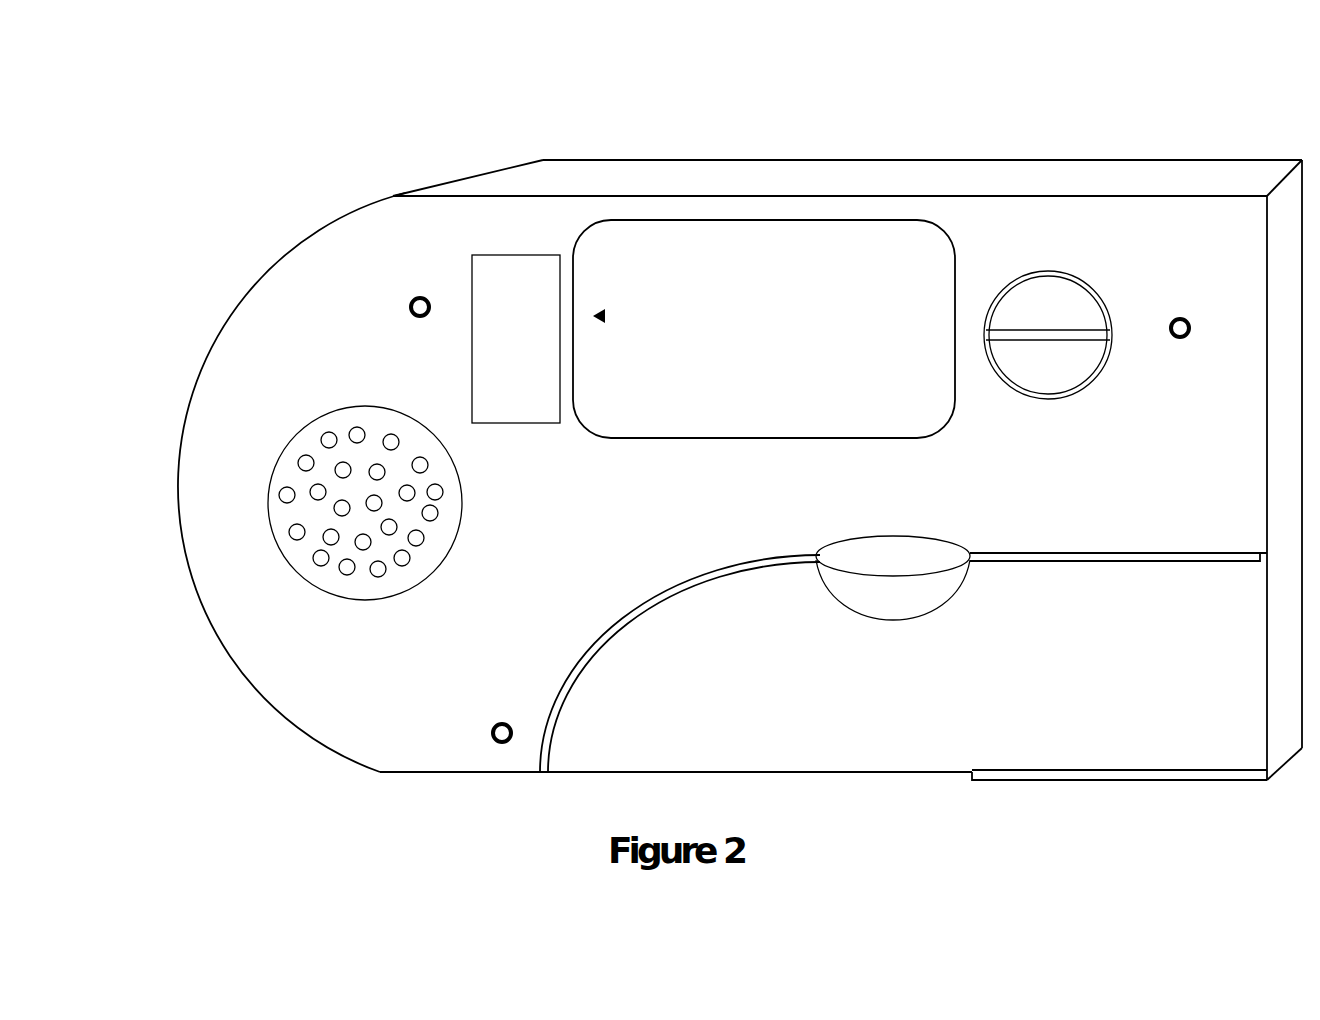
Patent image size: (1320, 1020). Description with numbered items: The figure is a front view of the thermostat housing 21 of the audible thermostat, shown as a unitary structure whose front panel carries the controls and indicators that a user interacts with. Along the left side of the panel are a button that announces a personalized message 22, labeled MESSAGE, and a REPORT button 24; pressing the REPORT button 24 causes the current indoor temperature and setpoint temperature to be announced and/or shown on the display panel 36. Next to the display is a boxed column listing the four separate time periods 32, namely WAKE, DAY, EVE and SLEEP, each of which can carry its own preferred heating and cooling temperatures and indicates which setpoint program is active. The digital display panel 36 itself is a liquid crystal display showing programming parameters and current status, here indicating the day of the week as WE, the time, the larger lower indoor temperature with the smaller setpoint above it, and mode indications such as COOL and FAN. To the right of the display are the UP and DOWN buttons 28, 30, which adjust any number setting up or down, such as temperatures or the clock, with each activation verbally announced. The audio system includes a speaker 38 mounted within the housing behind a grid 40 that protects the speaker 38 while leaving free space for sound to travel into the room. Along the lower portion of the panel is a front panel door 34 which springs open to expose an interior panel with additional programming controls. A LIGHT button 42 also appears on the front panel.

The thermostat housing 21 is at (548, 118).
The personalized message button 22 is at (420, 292).
The REPORT button 24 is at (478, 745).
The UP button 28 is at (1050, 300).
The DOWN button 30 is at (1090, 387).
The time periods 32 is at (533, 250).
The front panel door 34 is at (955, 600).
The display panel 36 is at (820, 232).
The speaker 38 is at (282, 548).
The grid 40 is at (290, 468).
The light button 42 is at (1188, 336).